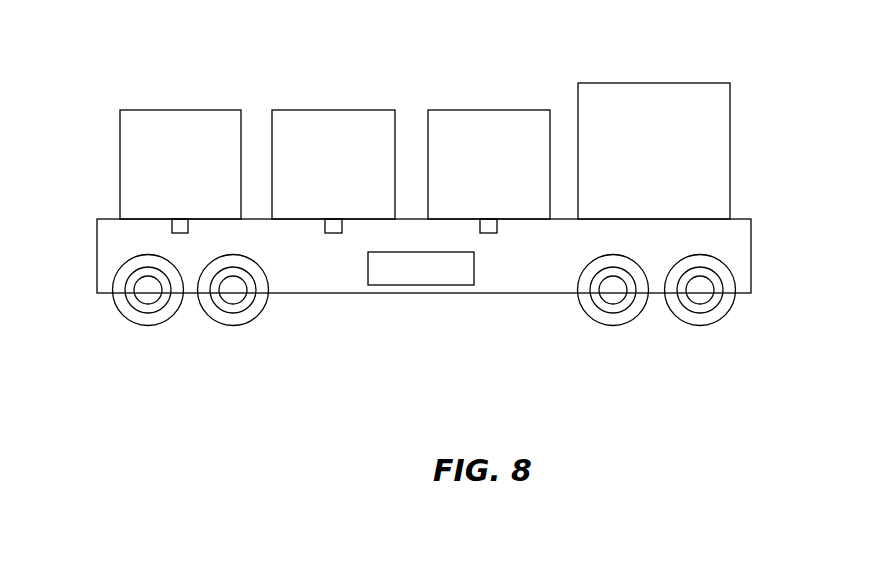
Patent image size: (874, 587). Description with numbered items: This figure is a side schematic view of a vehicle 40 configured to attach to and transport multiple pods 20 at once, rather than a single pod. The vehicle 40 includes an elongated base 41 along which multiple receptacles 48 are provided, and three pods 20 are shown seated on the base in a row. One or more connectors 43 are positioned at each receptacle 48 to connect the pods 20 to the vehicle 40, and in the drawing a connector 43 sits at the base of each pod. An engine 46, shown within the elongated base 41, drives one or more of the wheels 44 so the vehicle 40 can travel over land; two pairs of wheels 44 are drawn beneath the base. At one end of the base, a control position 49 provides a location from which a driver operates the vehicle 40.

The pod 20 is at (198, 143).
The vehicle 40 is at (772, 153).
The elongated base 41 is at (108, 257).
The connector 43 is at (325, 224).
The wheel 44 is at (228, 317).
The engine 46 is at (439, 269).
The receptacle 48 is at (227, 219).
The control position 49 is at (672, 107).